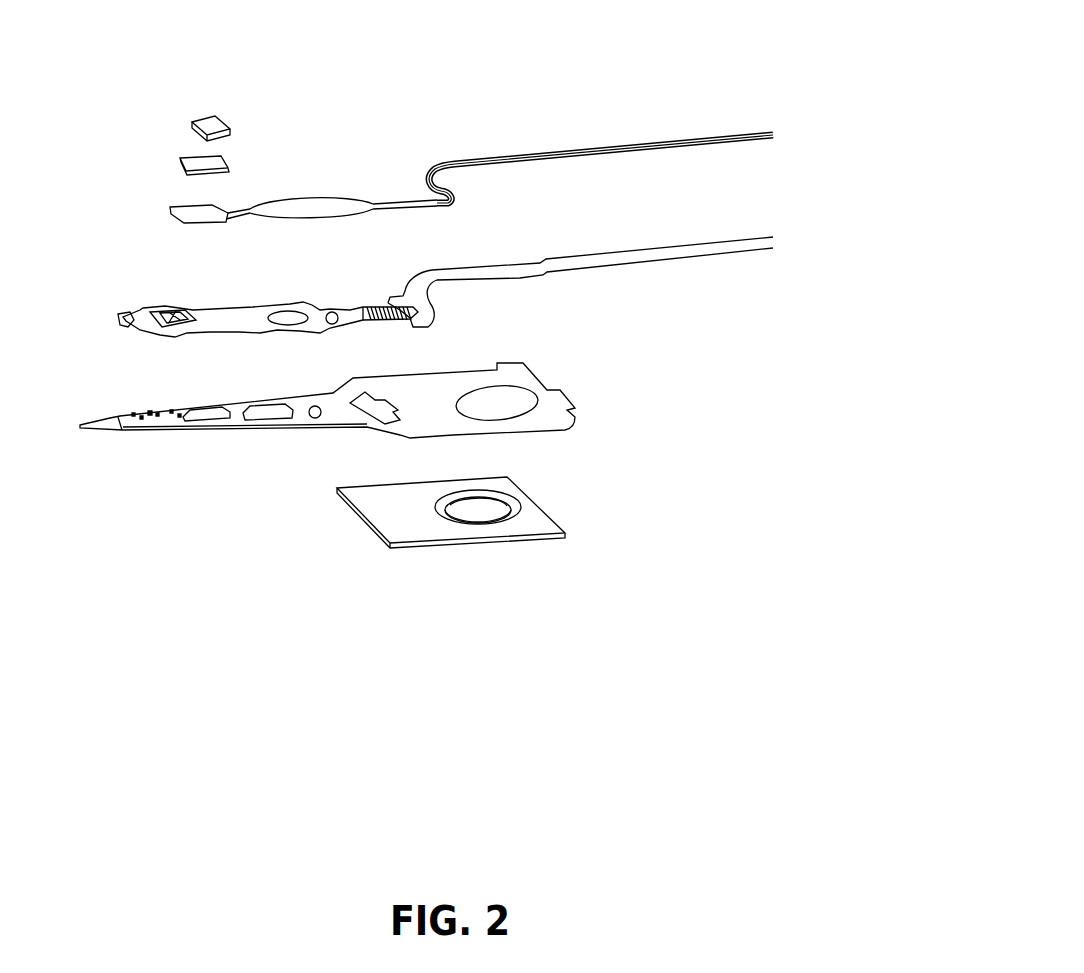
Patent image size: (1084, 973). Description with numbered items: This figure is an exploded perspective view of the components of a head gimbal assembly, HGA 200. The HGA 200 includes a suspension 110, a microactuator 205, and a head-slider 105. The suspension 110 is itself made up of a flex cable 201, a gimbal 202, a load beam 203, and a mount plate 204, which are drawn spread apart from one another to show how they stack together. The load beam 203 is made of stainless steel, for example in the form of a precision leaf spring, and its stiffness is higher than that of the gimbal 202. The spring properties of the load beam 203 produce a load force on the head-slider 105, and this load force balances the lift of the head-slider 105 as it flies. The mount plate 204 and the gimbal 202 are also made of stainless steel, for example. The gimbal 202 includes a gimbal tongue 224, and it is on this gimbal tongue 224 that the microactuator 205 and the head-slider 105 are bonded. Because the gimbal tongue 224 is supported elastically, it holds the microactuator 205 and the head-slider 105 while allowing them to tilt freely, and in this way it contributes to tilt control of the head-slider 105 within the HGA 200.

The HGA 200 is at (396, 32).
The head-slider 105 is at (210, 118).
The microactuator 205 is at (224, 158).
The flex cable 201 is at (683, 142).
The gimbal 202 is at (443, 263).
The gimbal tongue 224 is at (174, 316).
The load beam 203 is at (450, 373).
The mount plate 204 is at (548, 512).
The suspension 110 is at (665, 455).